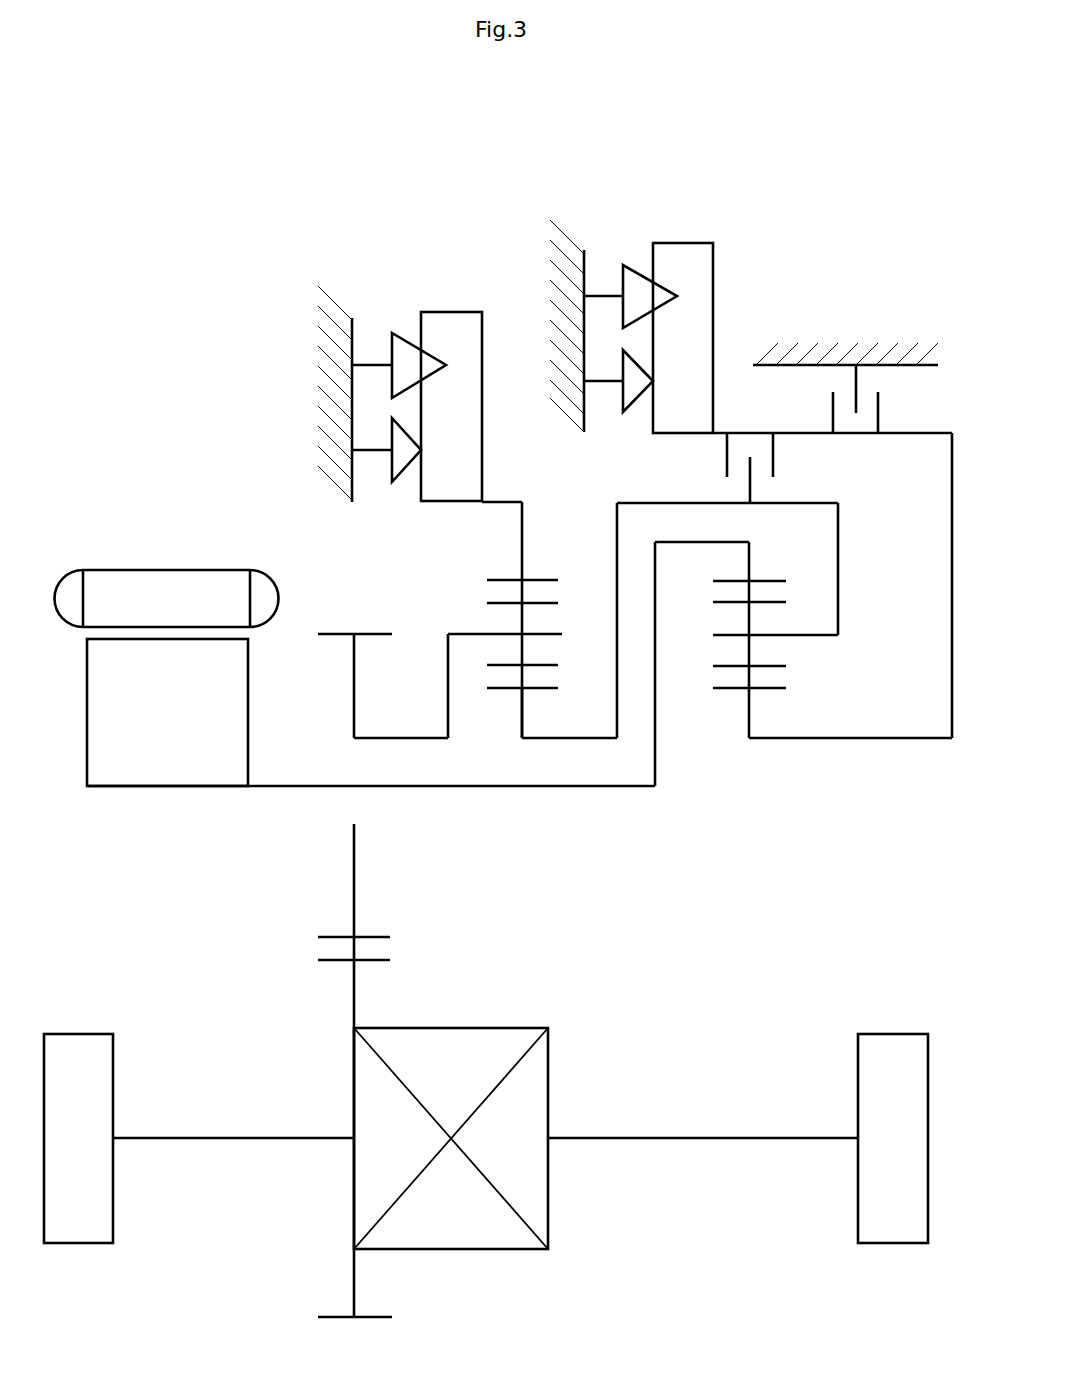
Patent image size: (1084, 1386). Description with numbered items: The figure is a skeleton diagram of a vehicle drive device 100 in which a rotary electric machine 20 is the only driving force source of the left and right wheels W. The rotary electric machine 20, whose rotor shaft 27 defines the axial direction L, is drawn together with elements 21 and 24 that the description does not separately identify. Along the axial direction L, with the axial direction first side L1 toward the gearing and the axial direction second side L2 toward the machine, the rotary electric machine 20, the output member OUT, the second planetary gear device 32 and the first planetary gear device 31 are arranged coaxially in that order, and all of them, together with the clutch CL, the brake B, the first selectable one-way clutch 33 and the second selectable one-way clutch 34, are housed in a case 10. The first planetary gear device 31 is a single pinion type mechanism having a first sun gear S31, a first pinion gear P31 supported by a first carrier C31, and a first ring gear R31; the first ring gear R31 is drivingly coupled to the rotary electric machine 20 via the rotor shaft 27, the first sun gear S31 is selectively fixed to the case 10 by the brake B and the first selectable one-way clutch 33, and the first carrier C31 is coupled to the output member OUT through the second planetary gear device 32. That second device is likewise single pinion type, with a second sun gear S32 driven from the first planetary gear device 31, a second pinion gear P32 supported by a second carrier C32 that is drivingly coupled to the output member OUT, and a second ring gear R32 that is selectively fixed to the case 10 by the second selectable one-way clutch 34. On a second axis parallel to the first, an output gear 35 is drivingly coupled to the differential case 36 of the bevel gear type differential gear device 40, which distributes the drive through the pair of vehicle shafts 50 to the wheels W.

The vehicle drive device 100 is at (829, 209).
The case 10 is at (335, 330).
The rotary electric machine 20 is at (162, 600).
The rotary electric machine 21 is at (95, 723).
The battery 24 is at (162, 575).
The rotor shaft 27 is at (541, 789).
The first planetary gear device 31 is at (803, 662).
The second planetary gear device 32 is at (605, 606).
The first selectable one-way clutch 33 is at (651, 234).
The second selectable one-way clutch 34 is at (410, 294).
The output gear 35 is at (340, 633).
The differential case 36 is at (335, 962).
The differential gear device 40 is at (540, 1019).
The vehicle shafts 50 is at (245, 1140).
The wheels W is at (75, 1243).
The brake B is at (888, 405).
The clutch CL is at (790, 474).
The output member OUT is at (354, 706).
The first ring gear R31 is at (776, 592).
The first carrier C31 is at (838, 575).
The first pinion gear P31 is at (718, 668).
The first sun gear S31 is at (776, 688).
The second ring gear R32 is at (497, 590).
The second carrier C32 is at (462, 633).
The second pinion gear P32 is at (552, 667).
The second sun gear S32 is at (508, 689).
The axial direction L is at (556, 100).
The axial direction first side L1 is at (579, 101).
The axial direction second side L2 is at (385, 101).